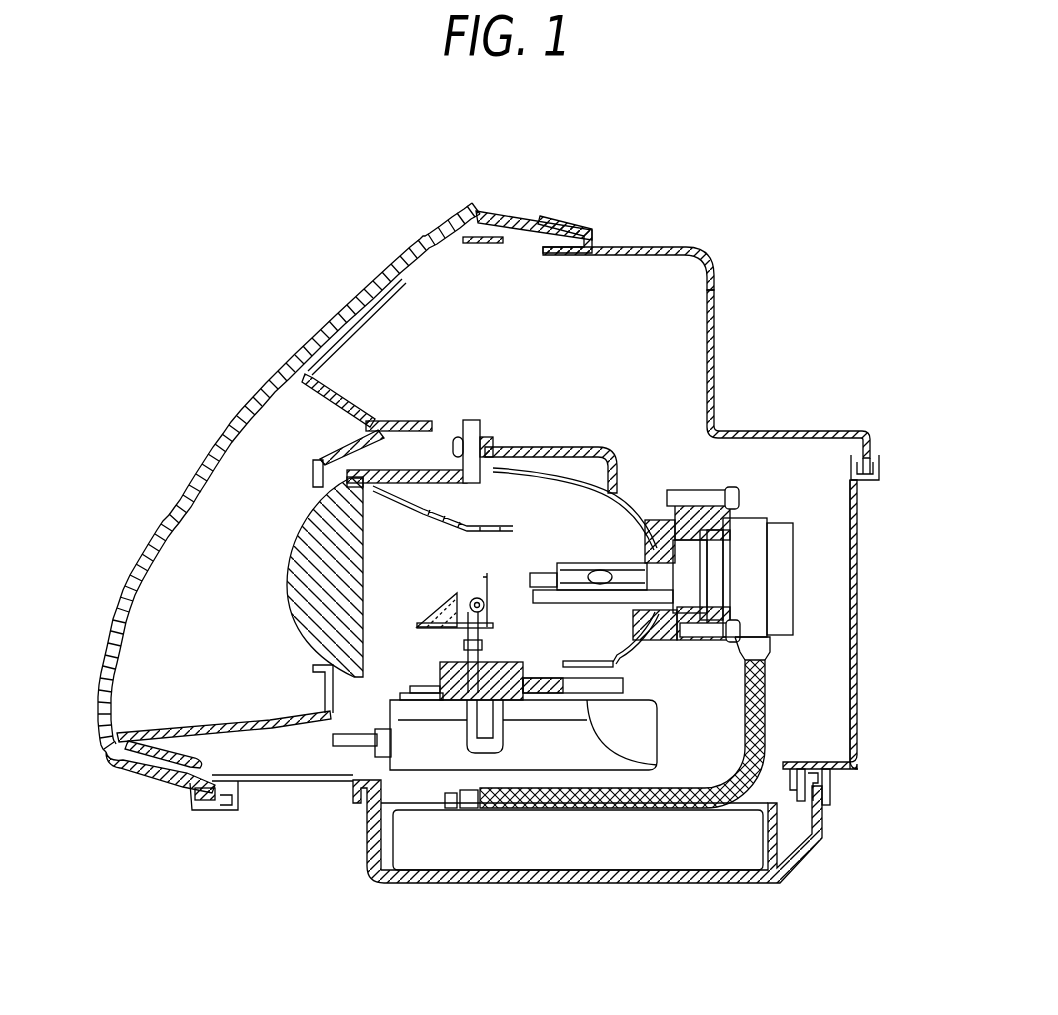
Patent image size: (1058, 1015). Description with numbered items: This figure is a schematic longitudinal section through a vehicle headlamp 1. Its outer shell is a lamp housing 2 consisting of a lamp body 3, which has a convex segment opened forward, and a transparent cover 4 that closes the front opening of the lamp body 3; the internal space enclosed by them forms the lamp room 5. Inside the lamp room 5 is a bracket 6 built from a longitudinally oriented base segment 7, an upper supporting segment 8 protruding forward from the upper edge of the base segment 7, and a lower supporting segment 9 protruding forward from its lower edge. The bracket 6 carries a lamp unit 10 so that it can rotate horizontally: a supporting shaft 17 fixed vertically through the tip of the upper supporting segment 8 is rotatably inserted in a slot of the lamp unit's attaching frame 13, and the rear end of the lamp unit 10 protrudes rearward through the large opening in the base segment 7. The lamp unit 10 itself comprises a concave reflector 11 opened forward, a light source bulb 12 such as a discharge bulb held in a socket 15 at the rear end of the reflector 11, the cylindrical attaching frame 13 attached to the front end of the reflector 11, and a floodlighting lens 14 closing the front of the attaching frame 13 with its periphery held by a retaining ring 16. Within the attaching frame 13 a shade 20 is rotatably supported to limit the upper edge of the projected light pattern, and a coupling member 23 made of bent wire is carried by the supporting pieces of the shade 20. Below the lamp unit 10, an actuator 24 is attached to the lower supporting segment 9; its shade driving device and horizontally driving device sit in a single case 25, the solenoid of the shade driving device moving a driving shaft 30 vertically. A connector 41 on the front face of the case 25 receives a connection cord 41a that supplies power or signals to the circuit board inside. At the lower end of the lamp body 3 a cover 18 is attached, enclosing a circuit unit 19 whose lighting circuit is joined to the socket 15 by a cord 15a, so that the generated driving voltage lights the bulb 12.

The vehicle headlamp 1 is at (726, 207).
The lamp housing 2 is at (716, 290).
The lamp body 3 is at (713, 330).
The transparent cover 4 is at (353, 297).
The lamp room 5 is at (682, 311).
The bracket 6 is at (560, 472).
The base segment 7 is at (617, 479).
The upper supporting segment 8 is at (592, 447).
The lower supporting segment 9 is at (645, 753).
The lamp unit 10 is at (446, 460).
The reflector 11 is at (473, 420).
The light source bulb 12 is at (690, 550).
The attaching frame 13 is at (377, 453).
The floodlighting lens 14 is at (293, 563).
The socket 15 is at (783, 593).
The cord 15a is at (767, 700).
The retaining ring 16 is at (355, 435).
The supporting shaft 17 is at (543, 450).
The cover 18 is at (707, 880).
The circuit unit 19 is at (637, 857).
The shade 20 is at (487, 573).
The coupling member 23 is at (440, 645).
The actuator 24 is at (641, 730).
The case 25 is at (645, 741).
The driving shaft 30 is at (445, 638).
The connector 41 is at (383, 753).
The connection cord 41a is at (353, 742).